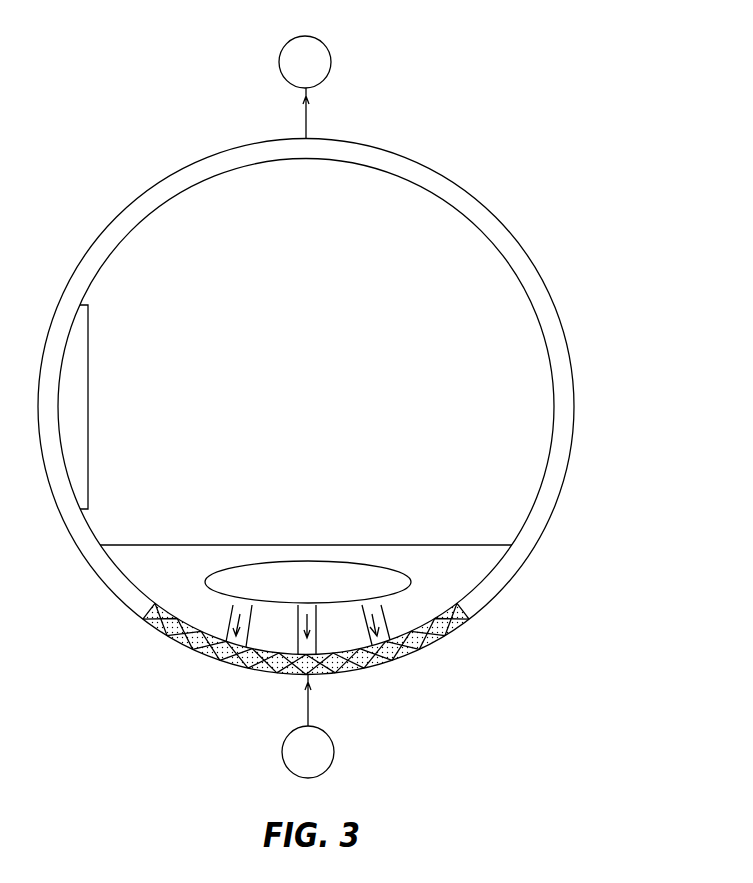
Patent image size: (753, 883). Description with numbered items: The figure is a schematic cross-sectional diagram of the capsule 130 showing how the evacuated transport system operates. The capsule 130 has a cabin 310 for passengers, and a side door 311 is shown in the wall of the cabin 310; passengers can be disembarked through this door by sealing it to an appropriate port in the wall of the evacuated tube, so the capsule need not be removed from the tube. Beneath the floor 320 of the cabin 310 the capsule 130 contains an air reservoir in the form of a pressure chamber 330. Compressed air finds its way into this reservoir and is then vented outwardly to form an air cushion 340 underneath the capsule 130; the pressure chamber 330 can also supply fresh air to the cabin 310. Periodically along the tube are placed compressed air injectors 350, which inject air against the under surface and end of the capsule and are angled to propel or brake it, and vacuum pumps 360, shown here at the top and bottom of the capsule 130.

The capsule 130 is at (511, 262).
The cabin 310 is at (331, 373).
The side door 311 is at (88, 398).
The floor 320 is at (415, 545).
The pressure chamber 330 is at (322, 596).
The air cushion 340 is at (228, 665).
The compressed air injector 350 is at (332, 735).
The vacuum pump 360 is at (328, 55).